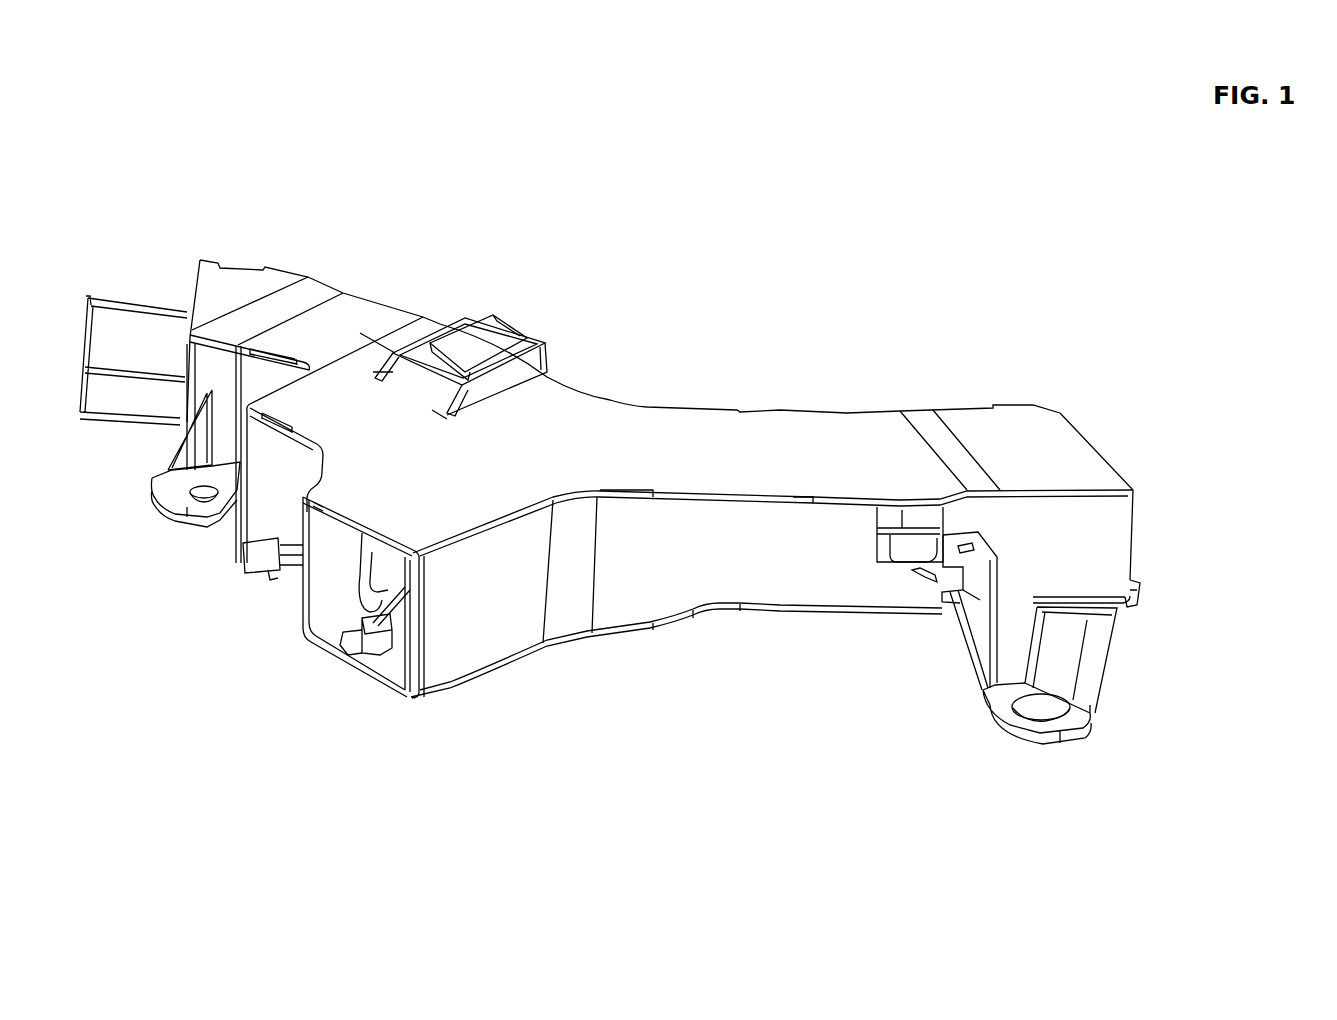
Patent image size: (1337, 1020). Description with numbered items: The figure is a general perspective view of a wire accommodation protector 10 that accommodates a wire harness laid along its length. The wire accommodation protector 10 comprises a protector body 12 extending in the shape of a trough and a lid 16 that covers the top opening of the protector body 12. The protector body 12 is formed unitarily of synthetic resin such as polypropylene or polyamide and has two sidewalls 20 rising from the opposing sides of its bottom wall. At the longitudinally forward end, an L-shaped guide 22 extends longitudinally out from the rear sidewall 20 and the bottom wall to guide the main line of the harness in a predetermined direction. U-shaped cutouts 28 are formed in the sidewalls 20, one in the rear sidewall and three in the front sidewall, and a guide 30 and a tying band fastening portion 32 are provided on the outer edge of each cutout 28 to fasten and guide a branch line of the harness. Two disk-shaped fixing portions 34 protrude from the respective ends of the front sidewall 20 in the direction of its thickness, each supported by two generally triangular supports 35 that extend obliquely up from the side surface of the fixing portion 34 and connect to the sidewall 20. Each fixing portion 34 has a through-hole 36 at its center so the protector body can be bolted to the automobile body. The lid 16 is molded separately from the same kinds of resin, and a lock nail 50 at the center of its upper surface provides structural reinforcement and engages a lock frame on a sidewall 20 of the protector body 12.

The wire accommodation protector 10 is at (852, 244).
The protector body 12 is at (745, 662).
The lid 16 is at (765, 340).
The sidewall 20 is at (1100, 545).
The L-shaped guide 22 is at (122, 330).
The U-shaped cutout 28 is at (308, 478).
The guide 30 is at (333, 630).
The tying band fastening portion 32 is at (260, 557).
The disk-shaped fixing portion 34 is at (175, 487).
The generally triangular support 35 is at (198, 447).
The through-hole 36 is at (197, 490).
The lock nail 50 is at (536, 343).